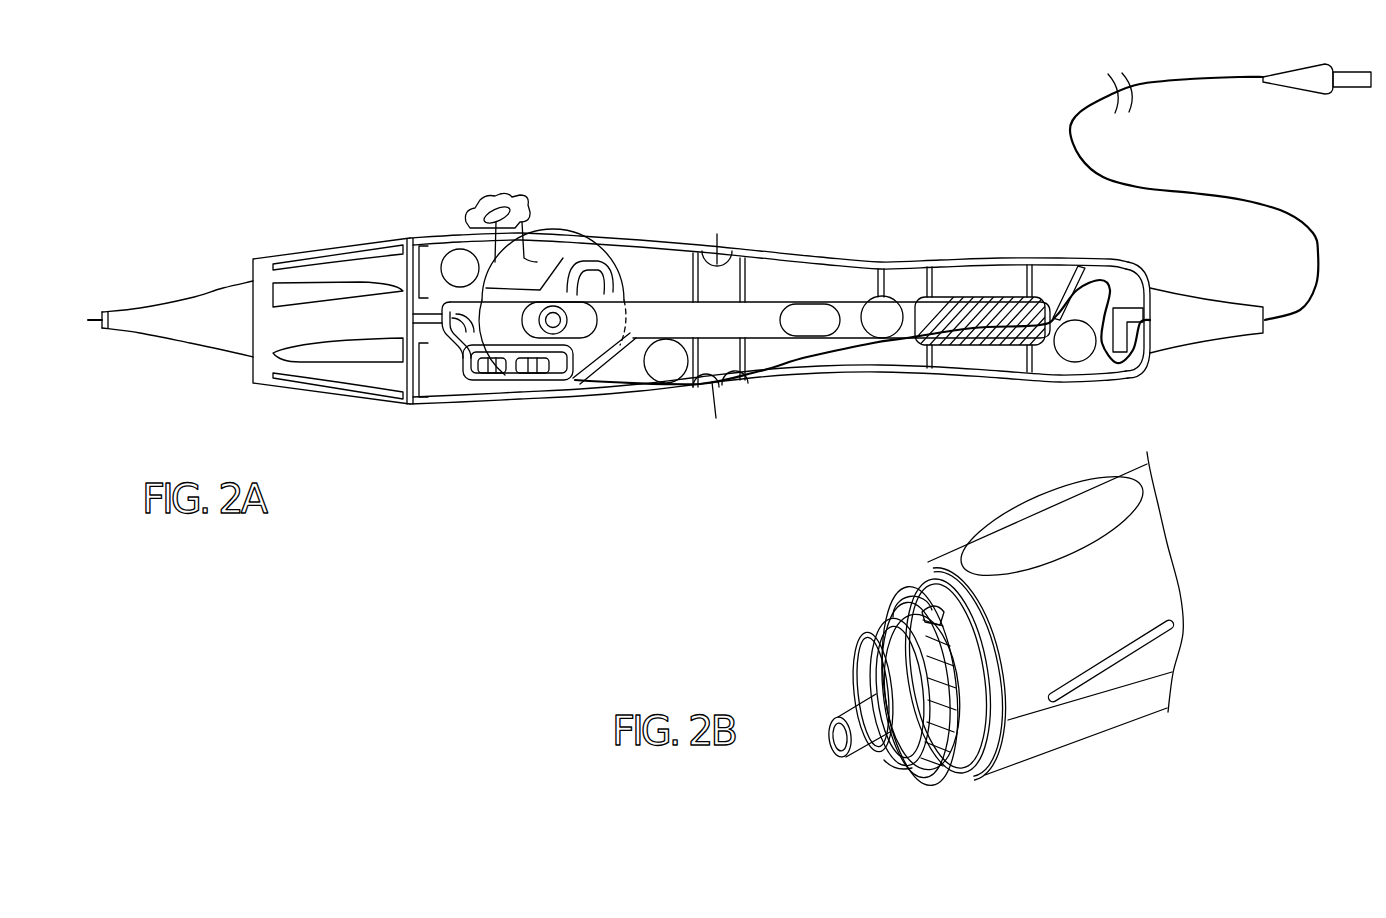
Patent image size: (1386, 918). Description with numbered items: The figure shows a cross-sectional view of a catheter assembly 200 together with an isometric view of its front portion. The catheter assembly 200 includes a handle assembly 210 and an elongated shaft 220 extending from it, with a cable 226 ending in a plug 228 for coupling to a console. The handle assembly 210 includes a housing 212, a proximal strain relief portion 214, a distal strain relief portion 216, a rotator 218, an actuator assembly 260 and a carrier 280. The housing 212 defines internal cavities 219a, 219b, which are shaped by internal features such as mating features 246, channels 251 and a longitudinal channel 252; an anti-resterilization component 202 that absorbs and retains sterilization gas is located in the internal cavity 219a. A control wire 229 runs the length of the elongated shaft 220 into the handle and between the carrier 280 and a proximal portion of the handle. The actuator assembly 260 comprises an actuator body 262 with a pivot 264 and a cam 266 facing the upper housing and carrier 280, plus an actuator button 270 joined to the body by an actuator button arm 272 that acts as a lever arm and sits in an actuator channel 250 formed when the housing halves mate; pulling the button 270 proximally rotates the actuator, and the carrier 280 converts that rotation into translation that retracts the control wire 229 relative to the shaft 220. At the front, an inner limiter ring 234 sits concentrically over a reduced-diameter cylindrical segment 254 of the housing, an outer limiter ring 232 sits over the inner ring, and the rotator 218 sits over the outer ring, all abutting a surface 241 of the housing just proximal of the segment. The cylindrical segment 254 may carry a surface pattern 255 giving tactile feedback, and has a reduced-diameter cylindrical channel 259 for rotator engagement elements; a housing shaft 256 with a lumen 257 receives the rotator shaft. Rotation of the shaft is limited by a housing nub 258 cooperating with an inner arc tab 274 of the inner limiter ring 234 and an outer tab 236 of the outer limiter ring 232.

In FIG. 2A, the catheter assembly 200 is at (215, 182).
In FIG. 2A, the anti-resterilization component 202 is at (980, 340).
In FIG. 2A, the handle assembly 210 is at (893, 256).
In FIG. 2A, the housing 212 is at (852, 260).
In FIG. 2B, the housing 212 is at (1166, 588).
In FIG. 2A, the proximal strain relief portion 214 is at (1228, 338).
In FIG. 2A, the distal strain relief portion 216 is at (165, 332).
In FIG. 2A, the rotator 218 is at (337, 403).
In FIG. 2A, the internal cavity 219a is at (1008, 295).
In FIG. 2A, the internal cavity 219b is at (678, 284).
In FIG. 2A, the elongated shaft 220 is at (101, 312).
In FIG. 2A, the cable 226 is at (1107, 288).
In FIG. 2A, the plug 228 is at (1312, 96).
In FIG. 2A, the control wire 229 is at (515, 382).
In FIG. 2B, the outer limiter ring 232 is at (888, 637).
In FIG. 2B, the inner limiter ring 234 is at (908, 594).
In FIG. 2B, the outer tab 236 is at (930, 772).
In FIG. 2B, the surface 241 is at (975, 765).
In FIG. 2A, the mating feature 246 is at (462, 265).
In FIG. 2A, the actuator channel 250 is at (604, 248).
In FIG. 2B, the actuator channel 250 is at (1118, 662).
In FIG. 2A, the channel 251 is at (717, 326).
In FIG. 2A, the longitudinal channel 252 is at (805, 312).
In FIG. 2B, the cylindrical segment 254 is at (970, 676).
In FIG. 2B, the surface pattern 255 is at (868, 660).
In FIG. 2B, the housing shaft 256 is at (848, 715).
In FIG. 2B, the lumen 257 is at (835, 738).
In FIG. 2B, the housing nub 258 is at (935, 604).
In FIG. 2B, the cylindrical channel 259 is at (900, 763).
In FIG. 2A, the actuator assembly 260 is at (543, 212).
In FIG. 2A, the actuator body 262 is at (610, 372).
In FIG. 2A, the pivot 264 is at (555, 334).
In FIG. 2A, the cam 266 is at (604, 258).
In FIG. 2A, the actuator button 270 is at (498, 205).
In FIG. 2A, the actuator button arm 272 is at (535, 222).
In FIG. 2B, the inner arc tab 274 is at (920, 592).
In FIG. 2A, the carrier 280 is at (455, 353).